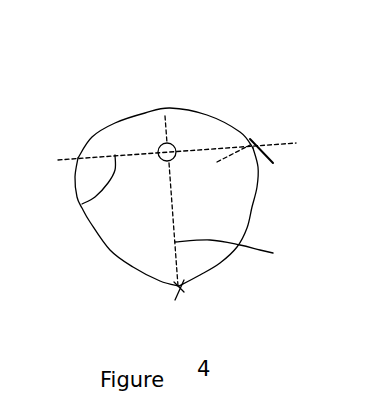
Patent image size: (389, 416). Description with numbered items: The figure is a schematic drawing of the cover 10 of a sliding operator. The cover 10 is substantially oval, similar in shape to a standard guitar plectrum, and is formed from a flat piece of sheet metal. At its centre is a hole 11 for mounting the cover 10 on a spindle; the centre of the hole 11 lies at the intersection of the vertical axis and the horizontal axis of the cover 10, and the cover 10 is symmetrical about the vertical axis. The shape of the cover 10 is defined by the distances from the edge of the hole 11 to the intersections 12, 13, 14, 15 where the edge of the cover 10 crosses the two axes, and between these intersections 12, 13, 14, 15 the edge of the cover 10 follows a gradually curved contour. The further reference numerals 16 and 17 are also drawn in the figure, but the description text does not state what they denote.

The cover 10 is at (250, 145).
The central hole 11 is at (170, 143).
The intersection 12 is at (78, 158).
The intersection 13 is at (163, 112).
The intersection 14 is at (273, 163).
The intersection 15 is at (178, 288).
The radius line 16 is at (243, 255).
The inner arc 17 is at (80, 204).